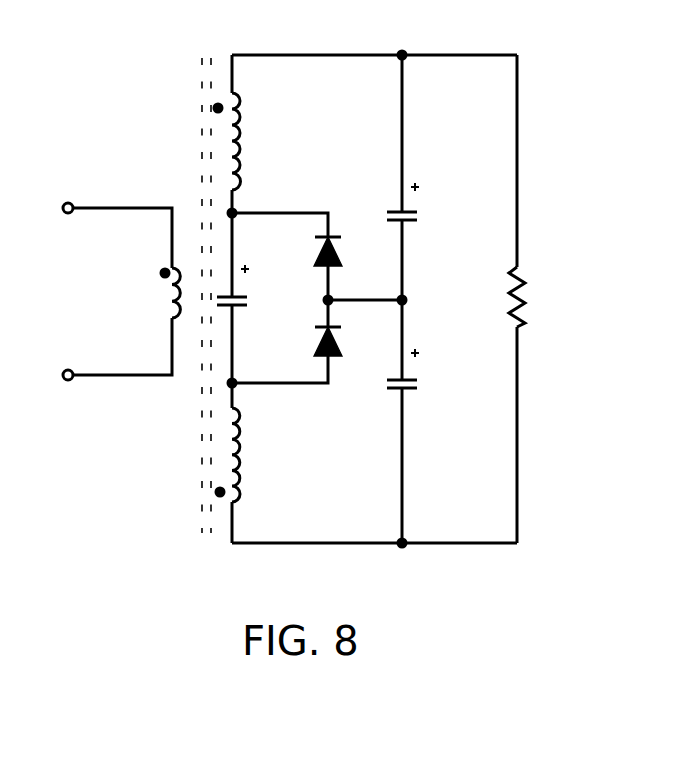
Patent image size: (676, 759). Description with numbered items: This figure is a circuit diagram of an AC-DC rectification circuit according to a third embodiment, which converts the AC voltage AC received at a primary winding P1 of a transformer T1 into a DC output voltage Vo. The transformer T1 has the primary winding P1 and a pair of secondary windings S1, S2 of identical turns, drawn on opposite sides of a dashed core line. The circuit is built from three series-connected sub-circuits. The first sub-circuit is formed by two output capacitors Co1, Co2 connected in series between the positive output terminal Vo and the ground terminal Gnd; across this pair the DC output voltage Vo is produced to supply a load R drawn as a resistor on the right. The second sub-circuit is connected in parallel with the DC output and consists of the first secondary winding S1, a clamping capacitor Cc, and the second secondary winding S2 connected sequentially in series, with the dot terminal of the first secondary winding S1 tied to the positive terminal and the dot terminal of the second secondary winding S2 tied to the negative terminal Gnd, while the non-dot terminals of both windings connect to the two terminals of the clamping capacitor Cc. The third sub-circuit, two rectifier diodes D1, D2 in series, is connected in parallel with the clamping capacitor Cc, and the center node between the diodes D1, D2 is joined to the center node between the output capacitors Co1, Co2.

The transformer T1 is at (208, 275).
The primary winding P1 is at (121, 291).
The first secondary winding S1 is at (247, 141).
The second secondary winding S2 is at (247, 455).
The AC voltage AC is at (64, 296).
The clamping capacitor Cc is at (249, 291).
The first diode D1 is at (350, 249).
The second diode D2 is at (350, 343).
The first output capacitor Co1 is at (434, 208).
The second output capacitor Co2 is at (434, 375).
The load R is at (534, 297).
The DC output voltage Vo is at (518, 31).
The ground terminal Gnd is at (520, 566).